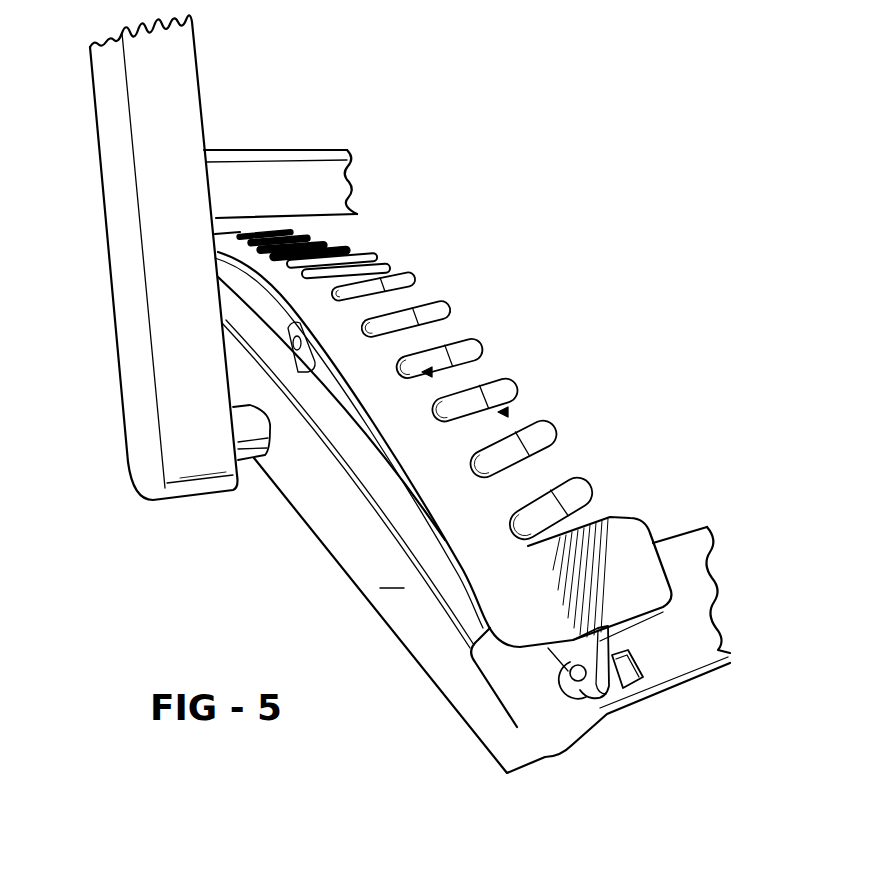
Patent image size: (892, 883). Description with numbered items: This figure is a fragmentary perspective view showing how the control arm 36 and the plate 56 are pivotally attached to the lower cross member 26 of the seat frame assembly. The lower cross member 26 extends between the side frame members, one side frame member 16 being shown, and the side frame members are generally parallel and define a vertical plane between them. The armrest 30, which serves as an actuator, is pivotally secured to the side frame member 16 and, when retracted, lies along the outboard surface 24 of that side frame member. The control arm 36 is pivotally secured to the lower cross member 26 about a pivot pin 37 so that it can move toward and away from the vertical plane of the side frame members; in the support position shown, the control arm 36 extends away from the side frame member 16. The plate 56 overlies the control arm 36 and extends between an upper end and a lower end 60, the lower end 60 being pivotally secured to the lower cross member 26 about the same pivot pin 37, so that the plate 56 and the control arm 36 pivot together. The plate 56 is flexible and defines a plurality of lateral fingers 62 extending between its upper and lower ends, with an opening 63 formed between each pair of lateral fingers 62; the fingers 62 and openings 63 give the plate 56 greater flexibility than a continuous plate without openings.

The side frame member 16 is at (380, 617).
The outboard surface 24 is at (443, 451).
The lower cross member 26 is at (685, 658).
The armrest 30 is at (132, 324).
The control arm 36 is at (578, 512).
The pivot pin 37 is at (571, 680).
The plate 56 is at (383, 442).
The lower end 60 is at (644, 612).
The lateral fingers 62 is at (485, 348).
The opening 63 is at (430, 372).